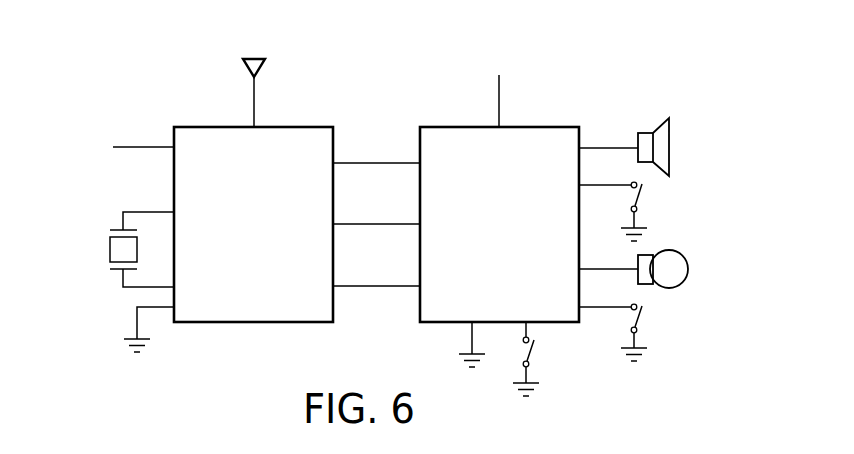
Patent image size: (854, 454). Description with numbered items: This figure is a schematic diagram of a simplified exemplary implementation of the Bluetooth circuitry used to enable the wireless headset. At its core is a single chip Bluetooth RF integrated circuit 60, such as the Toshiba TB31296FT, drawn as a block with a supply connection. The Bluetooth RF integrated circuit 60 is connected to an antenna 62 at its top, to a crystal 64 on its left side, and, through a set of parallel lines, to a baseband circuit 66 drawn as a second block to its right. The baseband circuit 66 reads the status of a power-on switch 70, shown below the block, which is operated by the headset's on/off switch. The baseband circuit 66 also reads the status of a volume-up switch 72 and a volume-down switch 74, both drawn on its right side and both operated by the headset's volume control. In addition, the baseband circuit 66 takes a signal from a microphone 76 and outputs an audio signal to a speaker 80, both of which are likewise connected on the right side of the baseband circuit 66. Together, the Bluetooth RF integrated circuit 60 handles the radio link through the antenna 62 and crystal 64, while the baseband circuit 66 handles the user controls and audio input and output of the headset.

The Bluetooth RF integrated circuit 60 is at (195, 127).
The antenna 62 is at (250, 58).
The crystal 64 is at (110, 248).
The baseband circuit 66 is at (435, 127).
The power-on switch 70 is at (534, 348).
The volume-up switch 72 is at (642, 319).
The volume-down switch 74 is at (642, 197).
The microphone 76 is at (687, 262).
The speaker 80 is at (670, 152).